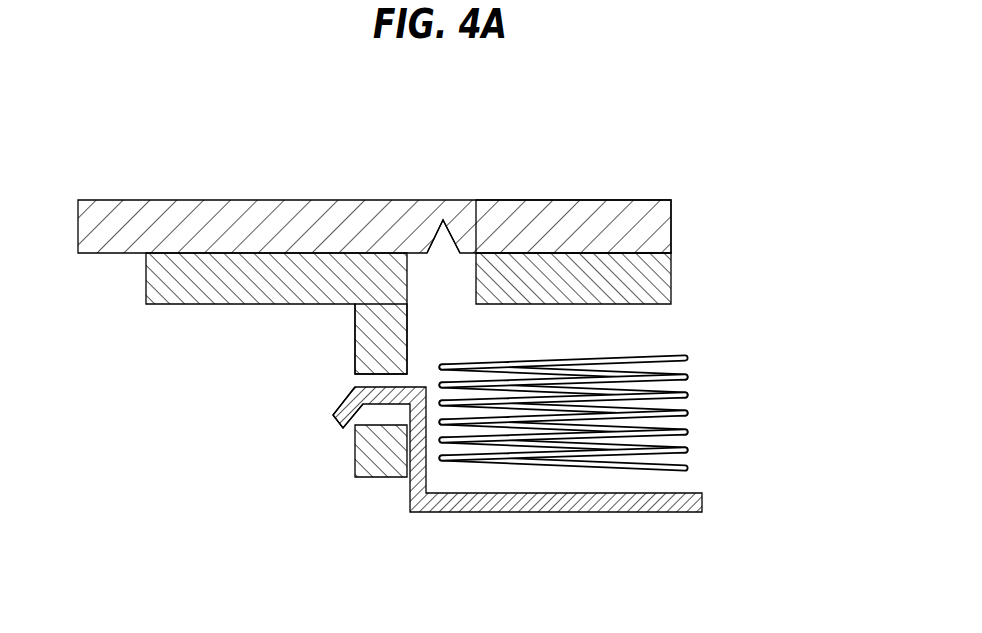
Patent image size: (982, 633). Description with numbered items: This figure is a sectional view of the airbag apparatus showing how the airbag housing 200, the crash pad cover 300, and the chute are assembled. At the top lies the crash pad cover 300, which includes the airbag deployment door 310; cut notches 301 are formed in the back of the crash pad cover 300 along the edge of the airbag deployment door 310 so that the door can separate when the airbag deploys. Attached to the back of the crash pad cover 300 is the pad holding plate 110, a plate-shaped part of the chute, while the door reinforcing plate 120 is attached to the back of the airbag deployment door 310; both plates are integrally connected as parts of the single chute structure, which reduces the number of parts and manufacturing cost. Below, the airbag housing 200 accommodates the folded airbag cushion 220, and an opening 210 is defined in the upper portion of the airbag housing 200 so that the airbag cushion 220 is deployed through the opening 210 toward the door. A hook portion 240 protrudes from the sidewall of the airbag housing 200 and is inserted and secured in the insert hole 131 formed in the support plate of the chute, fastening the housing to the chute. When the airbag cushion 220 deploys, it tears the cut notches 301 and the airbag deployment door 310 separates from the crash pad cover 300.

The crash pad cover 300 is at (311, 215).
The cut notches 301 is at (444, 224).
The airbag deployment door 310 is at (580, 222).
The door reinforcing plate 120 is at (640, 280).
The pad holding plate 110 is at (223, 290).
The opening 210 is at (430, 365).
The hook portion 240 is at (335, 414).
The insert hole 131 is at (347, 425).
The airbag cushion 220 is at (573, 463).
The airbag housing 200 is at (623, 503).